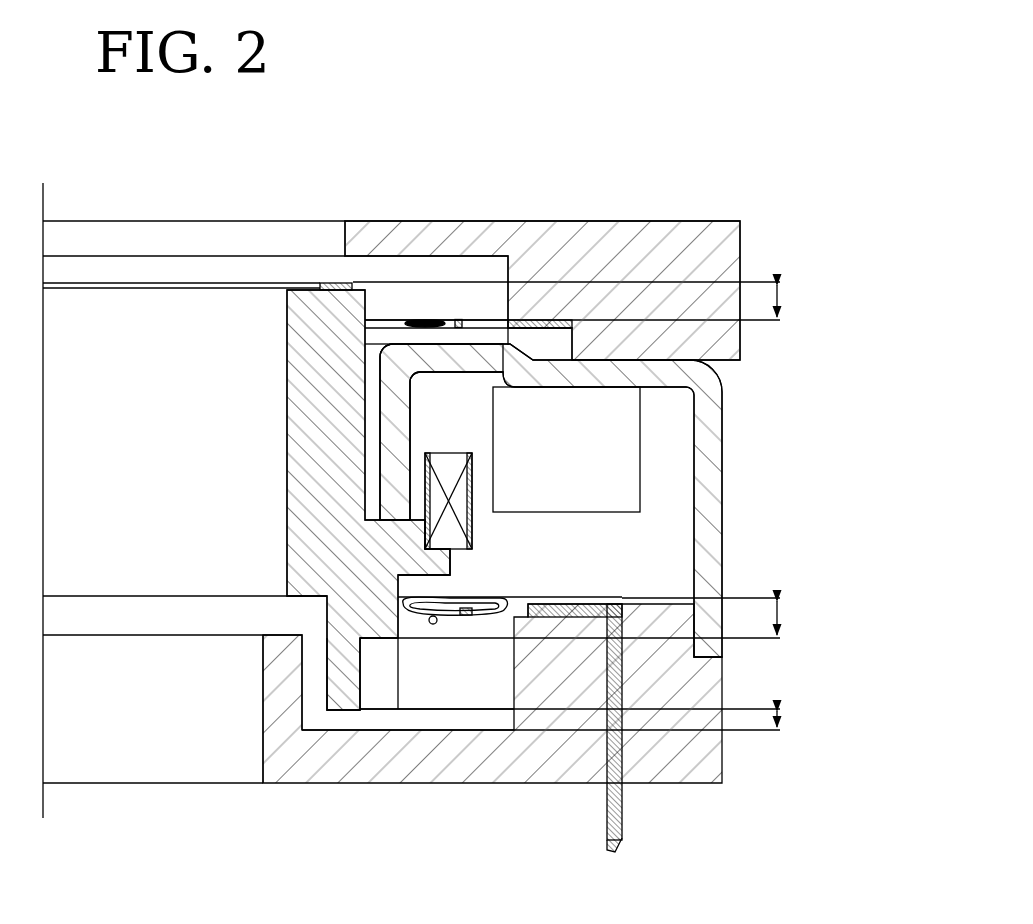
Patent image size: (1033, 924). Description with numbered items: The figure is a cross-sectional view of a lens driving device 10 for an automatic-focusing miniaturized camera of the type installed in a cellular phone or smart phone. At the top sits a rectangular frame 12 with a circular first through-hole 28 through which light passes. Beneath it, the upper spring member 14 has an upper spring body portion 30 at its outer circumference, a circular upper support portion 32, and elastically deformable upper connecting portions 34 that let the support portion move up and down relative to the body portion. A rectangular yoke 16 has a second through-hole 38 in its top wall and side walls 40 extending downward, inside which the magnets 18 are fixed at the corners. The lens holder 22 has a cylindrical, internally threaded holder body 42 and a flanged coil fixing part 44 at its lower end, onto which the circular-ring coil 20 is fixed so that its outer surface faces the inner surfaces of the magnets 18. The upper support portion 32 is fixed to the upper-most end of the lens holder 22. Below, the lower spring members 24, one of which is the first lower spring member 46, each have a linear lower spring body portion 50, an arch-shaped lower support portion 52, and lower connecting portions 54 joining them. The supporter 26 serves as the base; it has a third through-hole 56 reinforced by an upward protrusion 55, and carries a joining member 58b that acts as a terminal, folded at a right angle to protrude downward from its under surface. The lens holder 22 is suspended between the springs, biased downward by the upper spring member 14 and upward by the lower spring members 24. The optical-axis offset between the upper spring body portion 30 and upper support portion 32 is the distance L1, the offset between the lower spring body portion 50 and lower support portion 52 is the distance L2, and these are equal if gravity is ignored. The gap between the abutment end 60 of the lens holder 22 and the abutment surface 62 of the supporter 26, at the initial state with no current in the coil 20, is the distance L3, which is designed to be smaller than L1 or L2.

The lens driving device 10 is at (730, 107).
The frame 12 is at (667, 216).
The upper spring member 14 is at (560, 335).
The yoke 16 is at (727, 444).
The magnets 18 is at (641, 455).
The coil 20 is at (447, 452).
The lens holder 22 is at (285, 515).
The lower spring members 24 is at (490, 588).
The supporter 26 is at (536, 765).
The first through-hole 28 is at (341, 248).
The upper spring body portion 30 is at (513, 332).
The upper support portion 32 is at (322, 283).
The upper connecting portions 34 is at (405, 319).
The second through-hole 38 is at (380, 393).
The side walls 40 is at (722, 507).
The holder body 42 is at (287, 450).
The coil fixing part 44 is at (452, 565).
The first lower spring member 46 is at (608, 591).
The lower spring body portion 50 is at (527, 597).
The lower support portion 52 is at (376, 646).
The lower connecting portions 54 is at (505, 599).
The protrusion 55 is at (270, 657).
The third through-hole 56 is at (263, 735).
The joining member 58b is at (550, 598).
The abutment end 60 is at (334, 712).
The abutment surface 62 is at (374, 728).
The distance L1 is at (780, 301).
The distance L2 is at (782, 617).
The distance L3 is at (782, 722).